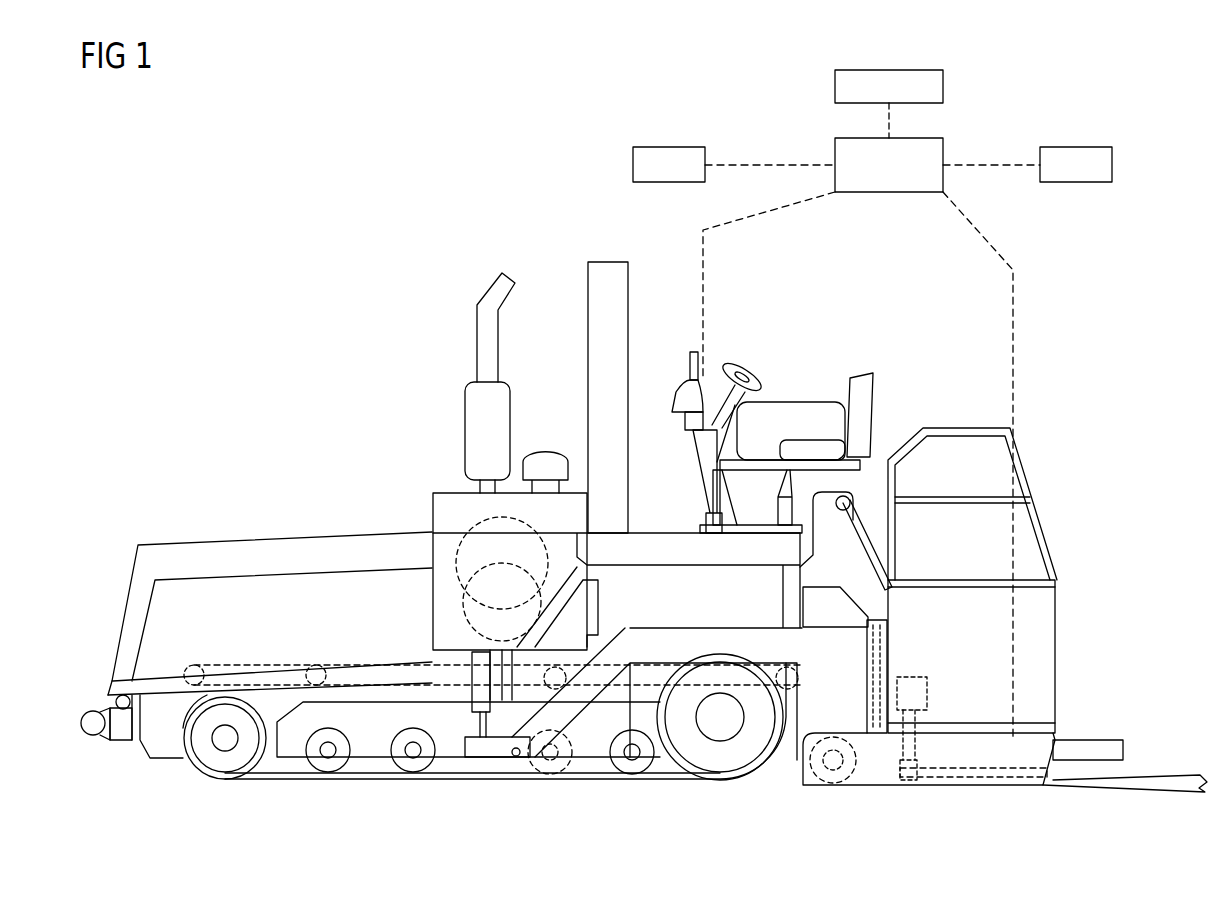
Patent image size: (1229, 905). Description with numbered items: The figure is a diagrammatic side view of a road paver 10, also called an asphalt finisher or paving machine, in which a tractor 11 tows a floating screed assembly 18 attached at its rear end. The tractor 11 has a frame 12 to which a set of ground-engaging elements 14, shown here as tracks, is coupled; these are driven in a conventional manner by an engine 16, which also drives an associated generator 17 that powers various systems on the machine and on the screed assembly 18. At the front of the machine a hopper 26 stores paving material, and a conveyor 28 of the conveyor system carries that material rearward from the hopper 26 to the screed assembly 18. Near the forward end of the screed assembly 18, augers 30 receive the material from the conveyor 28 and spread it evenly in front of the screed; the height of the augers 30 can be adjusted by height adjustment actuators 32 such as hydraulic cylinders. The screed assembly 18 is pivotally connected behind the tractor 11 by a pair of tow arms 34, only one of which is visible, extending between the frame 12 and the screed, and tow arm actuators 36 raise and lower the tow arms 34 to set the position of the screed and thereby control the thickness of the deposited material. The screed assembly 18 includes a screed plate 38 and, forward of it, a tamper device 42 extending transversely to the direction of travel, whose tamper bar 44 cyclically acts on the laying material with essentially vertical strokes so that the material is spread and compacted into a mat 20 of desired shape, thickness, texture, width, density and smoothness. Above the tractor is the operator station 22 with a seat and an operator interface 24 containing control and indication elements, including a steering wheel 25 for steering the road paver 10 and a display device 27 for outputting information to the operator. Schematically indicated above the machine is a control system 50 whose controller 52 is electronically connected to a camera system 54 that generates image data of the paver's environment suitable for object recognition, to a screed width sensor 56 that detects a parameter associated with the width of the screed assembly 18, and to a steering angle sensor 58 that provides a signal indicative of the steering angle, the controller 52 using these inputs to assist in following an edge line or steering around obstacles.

The road paver 10 is at (305, 298).
The tractor 11 is at (290, 440).
The frame 12 is at (672, 533).
The ground-engaging elements 14 is at (290, 782).
The engine 16 is at (433, 525).
The generator 17 is at (455, 590).
The screed assembly 18 is at (1092, 378).
The mat 20 is at (1123, 793).
The operator station 22 is at (767, 347).
The operator interface 24 is at (707, 348).
The steering wheel 25 is at (765, 386).
The hopper 26 is at (207, 540).
The display device 27 is at (690, 368).
The conveyor 28 is at (576, 785).
The auger 30 is at (820, 783).
The height adjustment actuator 32 is at (887, 650).
The tow arm 34 is at (757, 647).
The tow arm actuator 36 is at (478, 703).
The screed plate 38 is at (970, 782).
The tamper device 42 is at (932, 717).
The tamper bar 44 is at (905, 782).
The control system 50 is at (1003, 126).
The controller 52 is at (896, 193).
The camera system 54 is at (1112, 166).
The screed width sensor 56 is at (835, 86).
The steering angle sensor 58 is at (633, 165).